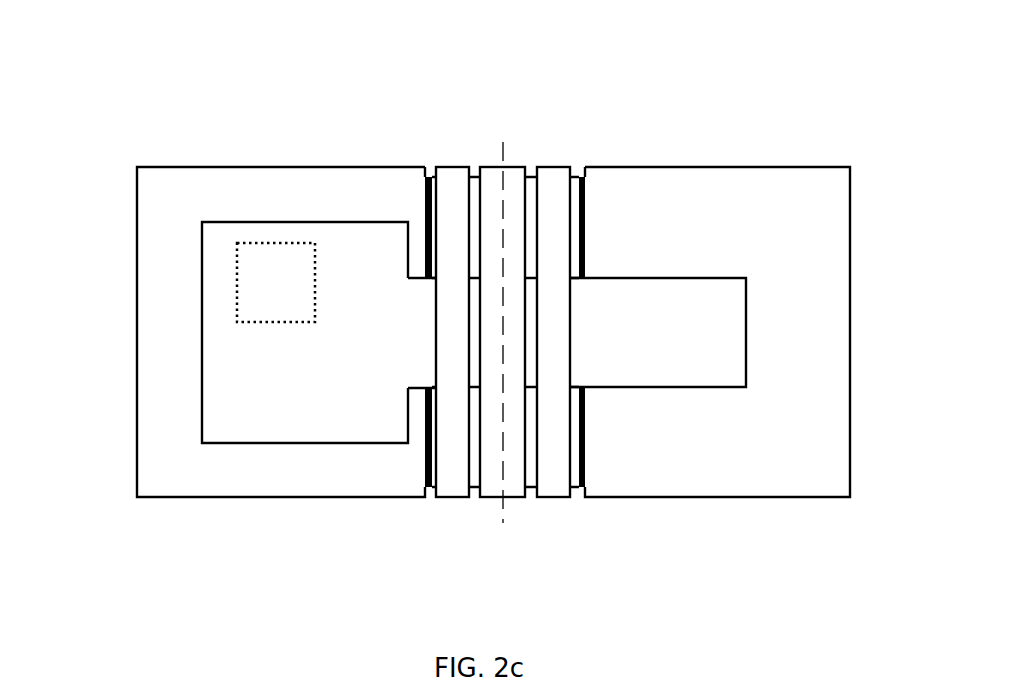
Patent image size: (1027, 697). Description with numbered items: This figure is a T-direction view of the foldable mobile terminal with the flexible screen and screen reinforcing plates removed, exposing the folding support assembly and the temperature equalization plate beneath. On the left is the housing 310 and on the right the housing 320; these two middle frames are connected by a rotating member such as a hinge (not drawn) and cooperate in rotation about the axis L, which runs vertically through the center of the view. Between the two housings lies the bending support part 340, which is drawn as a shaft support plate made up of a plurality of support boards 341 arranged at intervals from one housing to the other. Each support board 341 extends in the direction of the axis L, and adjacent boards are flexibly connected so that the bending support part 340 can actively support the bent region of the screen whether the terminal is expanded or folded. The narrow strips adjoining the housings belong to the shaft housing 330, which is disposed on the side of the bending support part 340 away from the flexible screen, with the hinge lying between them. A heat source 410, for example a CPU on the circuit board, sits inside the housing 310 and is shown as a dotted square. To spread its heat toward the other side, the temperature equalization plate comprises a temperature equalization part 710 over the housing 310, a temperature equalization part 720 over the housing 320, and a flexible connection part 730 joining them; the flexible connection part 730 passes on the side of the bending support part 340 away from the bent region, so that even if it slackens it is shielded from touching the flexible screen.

The housing 310 is at (173, 197).
The housing 320 is at (790, 198).
The shaft housing 330 is at (475, 457).
The bending support part 340 is at (421, 78).
The support board 341 is at (453, 185).
The heat source 410 is at (268, 243).
The temperature equalization part 710 is at (227, 363).
The temperature equalization part 720 is at (713, 352).
The flexible connection part 730 is at (475, 330).
The axis L is at (500, 517).